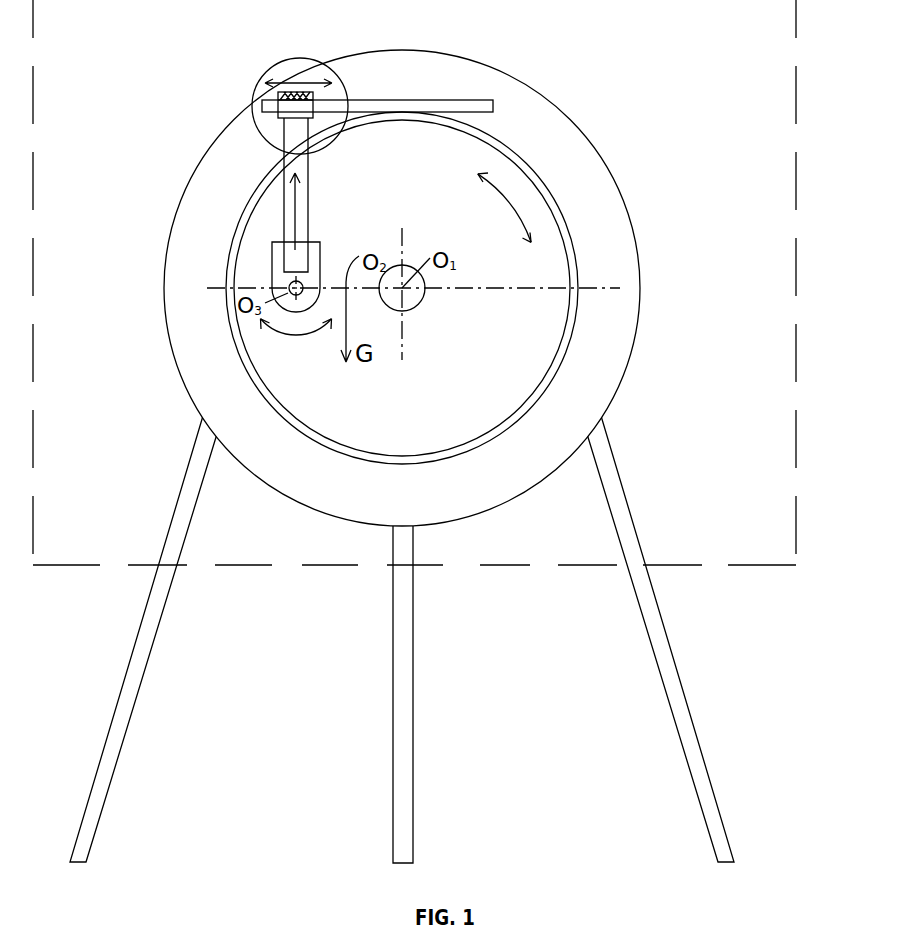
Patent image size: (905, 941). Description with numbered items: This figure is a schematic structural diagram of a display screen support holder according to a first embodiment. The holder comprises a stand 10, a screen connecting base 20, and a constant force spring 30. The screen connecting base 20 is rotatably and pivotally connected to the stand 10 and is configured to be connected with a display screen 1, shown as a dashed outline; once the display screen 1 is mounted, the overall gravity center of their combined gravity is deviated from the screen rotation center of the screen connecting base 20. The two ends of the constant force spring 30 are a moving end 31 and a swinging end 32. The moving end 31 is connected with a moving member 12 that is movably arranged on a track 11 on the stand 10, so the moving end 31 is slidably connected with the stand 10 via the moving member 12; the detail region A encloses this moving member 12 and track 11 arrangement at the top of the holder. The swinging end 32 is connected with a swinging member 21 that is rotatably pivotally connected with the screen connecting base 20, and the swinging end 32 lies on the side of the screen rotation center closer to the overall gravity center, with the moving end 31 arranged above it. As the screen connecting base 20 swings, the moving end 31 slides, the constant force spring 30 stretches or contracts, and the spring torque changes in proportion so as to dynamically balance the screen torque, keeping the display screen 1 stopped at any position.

The display screen 1 is at (133, 565).
The stand 10 is at (590, 392).
The track 11 is at (515, 92).
The moving member 12 is at (297, 97).
The screen connecting base 20 is at (538, 337).
The swinging member 21 is at (281, 282).
The constant force spring 30 is at (308, 160).
The moving end 31 is at (303, 110).
The swinging end 32 is at (301, 257).
The detail region A is at (317, 56).